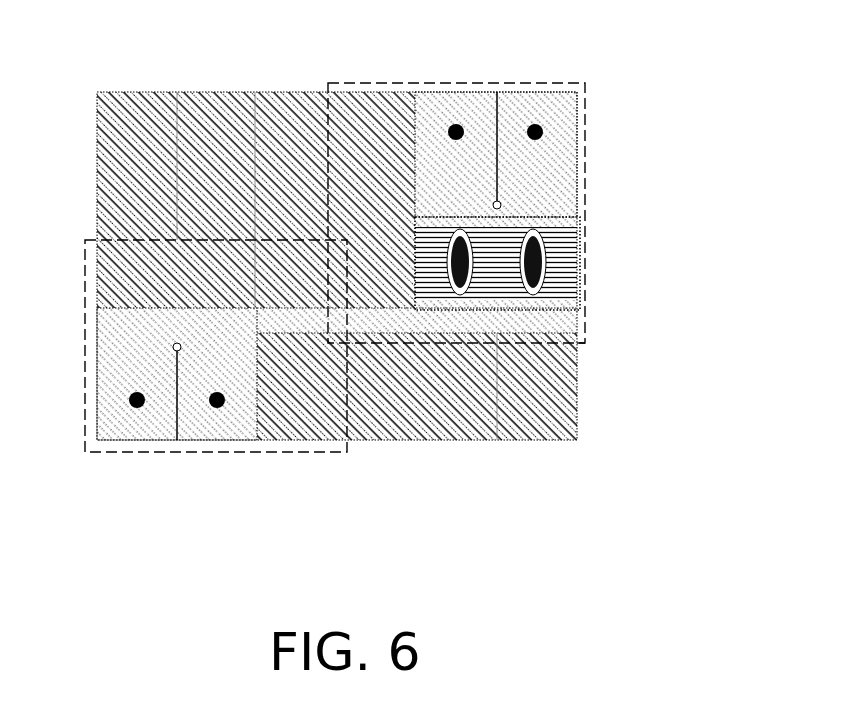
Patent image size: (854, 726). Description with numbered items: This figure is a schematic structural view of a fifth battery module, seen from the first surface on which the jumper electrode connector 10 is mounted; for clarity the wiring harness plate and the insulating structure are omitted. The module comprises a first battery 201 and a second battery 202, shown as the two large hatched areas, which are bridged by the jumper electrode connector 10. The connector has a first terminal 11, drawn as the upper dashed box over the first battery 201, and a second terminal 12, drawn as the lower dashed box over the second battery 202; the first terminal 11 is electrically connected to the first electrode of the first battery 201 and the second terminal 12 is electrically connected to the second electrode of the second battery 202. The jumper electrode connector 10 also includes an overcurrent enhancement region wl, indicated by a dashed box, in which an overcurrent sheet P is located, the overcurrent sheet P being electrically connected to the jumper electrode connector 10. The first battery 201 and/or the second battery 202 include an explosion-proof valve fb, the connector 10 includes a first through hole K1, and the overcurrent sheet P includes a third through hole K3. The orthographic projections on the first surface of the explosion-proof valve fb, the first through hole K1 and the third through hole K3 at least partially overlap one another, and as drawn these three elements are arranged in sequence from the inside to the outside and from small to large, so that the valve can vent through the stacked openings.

The jumper electrode connector 10 is at (335, 271).
The first terminal 11 is at (432, 82).
The second terminal 12 is at (252, 453).
The first battery 201 is at (527, 440).
The second battery 202 is at (160, 92).
The overcurrent enhancement region wl is at (572, 202).
The explosion-proof valve fb is at (578, 228).
The first through hole K1 is at (578, 290).
The third through hole K3 is at (547, 258).
The overcurrent sheet P is at (587, 347).